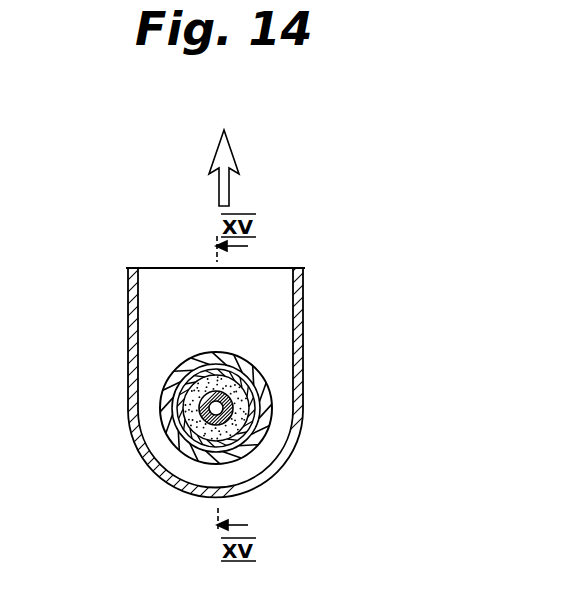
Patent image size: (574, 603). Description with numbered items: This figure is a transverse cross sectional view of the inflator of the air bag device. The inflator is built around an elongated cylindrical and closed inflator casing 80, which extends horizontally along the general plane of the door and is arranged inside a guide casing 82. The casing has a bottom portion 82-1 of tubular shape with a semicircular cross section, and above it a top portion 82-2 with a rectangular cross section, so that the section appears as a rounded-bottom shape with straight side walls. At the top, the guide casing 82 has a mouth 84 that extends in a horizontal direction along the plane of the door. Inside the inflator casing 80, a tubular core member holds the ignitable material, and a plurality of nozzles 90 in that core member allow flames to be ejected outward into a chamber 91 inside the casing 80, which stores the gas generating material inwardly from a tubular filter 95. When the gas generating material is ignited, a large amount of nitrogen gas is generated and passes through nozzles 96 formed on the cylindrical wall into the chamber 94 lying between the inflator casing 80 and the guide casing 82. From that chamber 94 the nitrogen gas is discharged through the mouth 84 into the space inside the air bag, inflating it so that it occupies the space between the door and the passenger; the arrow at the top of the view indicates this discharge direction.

The inflator casing 80 is at (192, 352).
The guide casing 82 is at (287, 301).
The bottom portion 82-1 is at (300, 426).
The upper housing portion 82-2 is at (303, 282).
The mouth 84 is at (268, 268).
The nozzles 90 is at (207, 401).
The chamber 91 is at (226, 418).
The chamber 94 is at (277, 396).
The tubular filter 95 is at (183, 442).
The nozzles 96 is at (170, 382).